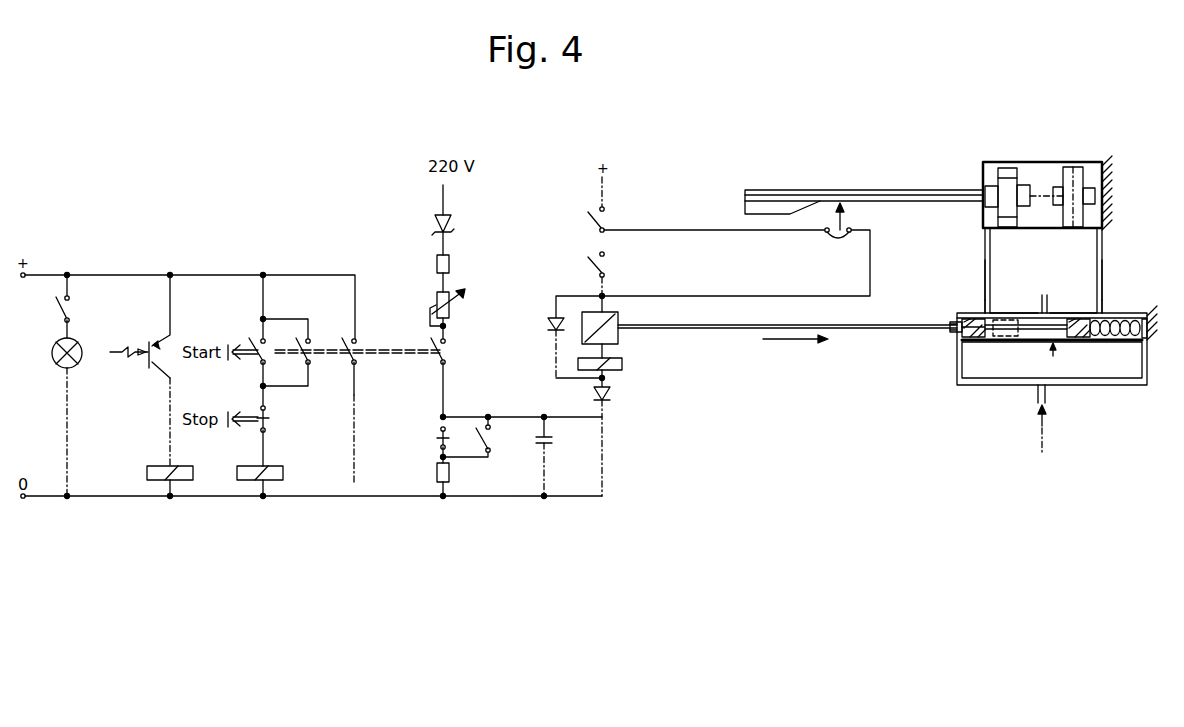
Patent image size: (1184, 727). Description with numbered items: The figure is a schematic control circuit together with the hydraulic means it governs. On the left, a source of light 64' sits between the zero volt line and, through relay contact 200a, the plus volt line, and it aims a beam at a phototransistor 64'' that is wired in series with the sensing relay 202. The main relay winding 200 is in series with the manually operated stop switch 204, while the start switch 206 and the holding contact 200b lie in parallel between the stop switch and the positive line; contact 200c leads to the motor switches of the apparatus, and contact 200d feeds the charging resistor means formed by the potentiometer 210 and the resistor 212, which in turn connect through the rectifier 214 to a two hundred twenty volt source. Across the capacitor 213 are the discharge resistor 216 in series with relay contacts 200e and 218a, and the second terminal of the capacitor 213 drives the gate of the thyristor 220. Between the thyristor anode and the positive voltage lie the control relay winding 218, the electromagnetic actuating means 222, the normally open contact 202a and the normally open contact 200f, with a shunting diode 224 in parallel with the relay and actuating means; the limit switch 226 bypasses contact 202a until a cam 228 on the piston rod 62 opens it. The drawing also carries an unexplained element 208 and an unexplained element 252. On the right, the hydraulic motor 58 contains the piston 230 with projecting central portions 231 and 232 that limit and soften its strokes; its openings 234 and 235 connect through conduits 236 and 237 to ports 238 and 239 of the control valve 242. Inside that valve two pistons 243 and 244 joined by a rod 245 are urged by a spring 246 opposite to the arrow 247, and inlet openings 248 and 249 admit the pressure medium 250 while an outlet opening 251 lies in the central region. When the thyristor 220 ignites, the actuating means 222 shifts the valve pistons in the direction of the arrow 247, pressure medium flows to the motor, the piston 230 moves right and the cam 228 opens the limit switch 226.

The relay contact 200a is at (71, 310).
The source of light 64' is at (80, 408).
The phototransistor 64'' is at (140, 370).
The sensing relay 202 is at (158, 468).
The main relay winding 200 is at (276, 467).
The start switch 206 is at (285, 360).
The stop switch 204 is at (266, 418).
The holding contact 200b is at (286, 353).
The relay contact 200c is at (346, 358).
The relay contact 200d is at (437, 358).
The relay contact 200e is at (440, 442).
The mechanical coupling 208 is at (358, 418).
The rectifier 214 is at (431, 222).
The resistor 212 is at (435, 265).
The potentiometer 210 is at (434, 301).
The relay contact 218a is at (481, 440).
The capacitor 213 is at (546, 441).
The discharge resistor 216 is at (435, 474).
The relay contact 200f is at (605, 222).
The relay contact 202a is at (605, 266).
The shunting diode 224 is at (546, 324).
The electromagnetic actuating means 222 is at (616, 320).
The control relay winding 218 is at (624, 368).
The thyristor 220 is at (606, 396).
The limit switch 226 is at (838, 240).
The cam 228 is at (745, 214).
The piston rod 62 is at (866, 190).
The arrow 247 is at (796, 342).
The rod 252 is at (868, 332).
The hydraulic operating motor 58 is at (1048, 152).
The piston 230 is at (1006, 232).
The projecting central portion 231 is at (990, 212).
The projecting central portion 232 is at (1025, 210).
The opening 234 is at (1102, 232).
The opening 235 is at (985, 230).
The conduit 236 is at (1102, 276).
The conduit 237 is at (985, 276).
The port 238 is at (1100, 314).
The port 239 is at (985, 312).
The outlet opening 251 is at (1040, 298).
The control valve 242 is at (1057, 354).
The piston 243 is at (1078, 318).
The piston 244 is at (972, 342).
The rod 245 is at (1025, 342).
The spring 246 is at (1116, 342).
The inlet opening 248 is at (1147, 345).
The inlet opening 249 is at (957, 350).
The pressure medium 250 is at (1044, 434).